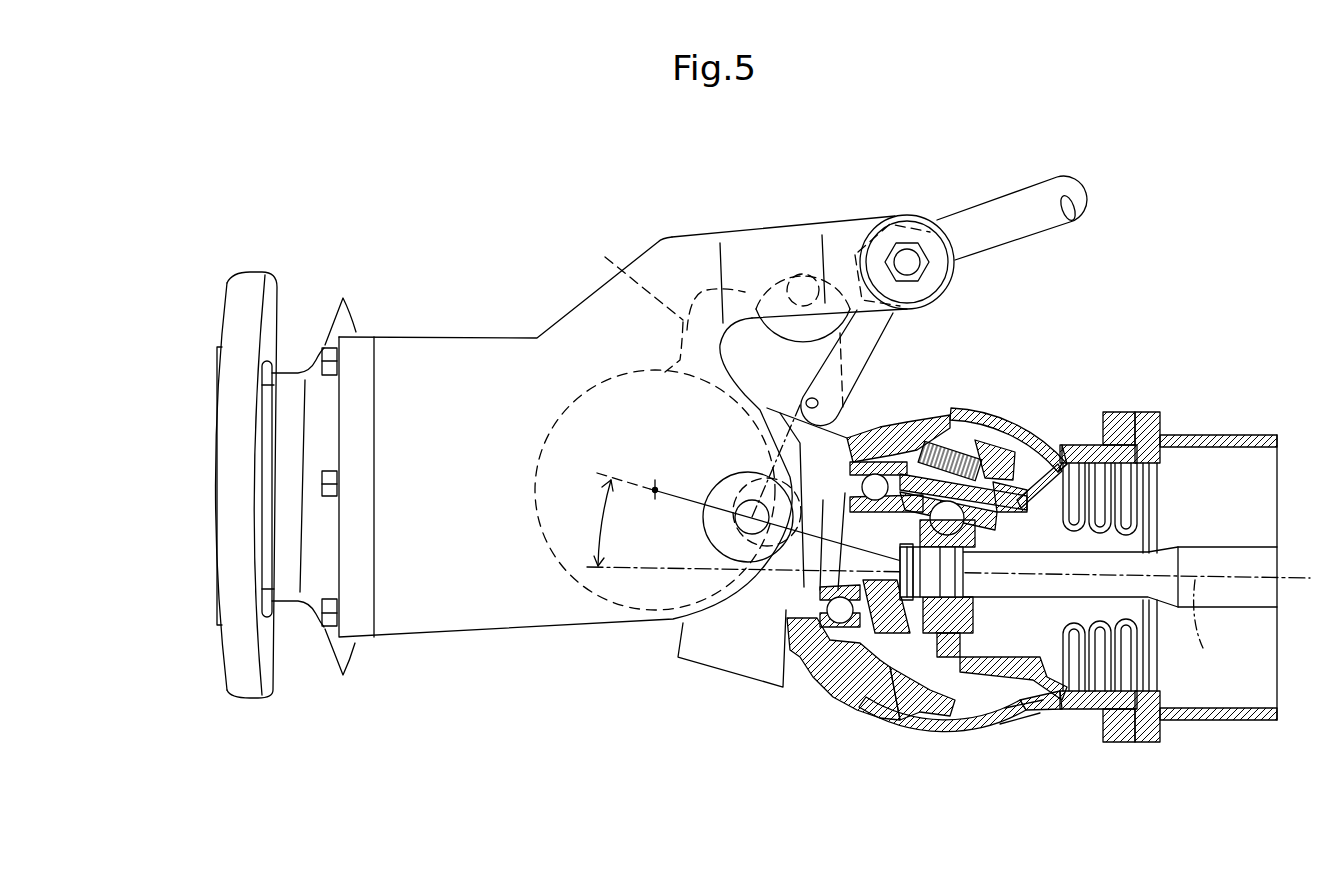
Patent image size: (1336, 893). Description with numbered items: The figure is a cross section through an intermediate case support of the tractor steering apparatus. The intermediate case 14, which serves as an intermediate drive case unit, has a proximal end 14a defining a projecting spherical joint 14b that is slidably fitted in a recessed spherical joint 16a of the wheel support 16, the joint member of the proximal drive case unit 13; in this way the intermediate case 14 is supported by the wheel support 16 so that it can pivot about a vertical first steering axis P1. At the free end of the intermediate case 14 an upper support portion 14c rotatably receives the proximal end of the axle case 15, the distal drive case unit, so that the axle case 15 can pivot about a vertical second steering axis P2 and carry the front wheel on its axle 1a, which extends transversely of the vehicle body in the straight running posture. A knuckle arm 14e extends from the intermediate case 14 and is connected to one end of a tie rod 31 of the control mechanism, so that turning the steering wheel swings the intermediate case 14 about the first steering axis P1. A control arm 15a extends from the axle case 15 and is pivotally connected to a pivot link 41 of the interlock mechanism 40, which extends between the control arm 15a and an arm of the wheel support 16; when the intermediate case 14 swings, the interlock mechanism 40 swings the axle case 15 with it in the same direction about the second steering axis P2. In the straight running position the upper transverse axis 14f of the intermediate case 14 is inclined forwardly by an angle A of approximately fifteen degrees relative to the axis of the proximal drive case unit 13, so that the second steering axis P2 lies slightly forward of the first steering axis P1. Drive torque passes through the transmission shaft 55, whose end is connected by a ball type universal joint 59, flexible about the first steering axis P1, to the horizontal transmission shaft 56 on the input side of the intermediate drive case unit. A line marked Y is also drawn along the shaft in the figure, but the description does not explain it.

The axle 1a is at (208, 487).
The proximal drive case unit 13 is at (1252, 435).
The intermediate case 14 is at (720, 673).
The proximal end 14a is at (805, 658).
The projecting spherical joint 14b is at (930, 733).
The upper support portion 14c is at (545, 522).
The knuckle arm 14e is at (743, 317).
The upper transverse axis 14f is at (690, 470).
The axle case 15 is at (449, 336).
The control arm 15a is at (841, 230).
The wheel support 16 is at (1027, 420).
The recessed spherical joint 16a is at (1040, 713).
The tie rod 31 is at (1020, 200).
The interlock mechanism 40 is at (878, 413).
The pivot link 41 is at (880, 322).
The transmission shaft 55 is at (1235, 550).
The horizontal transmission shaft 56 is at (890, 428).
The universal joint 59 is at (983, 607).
The first steering axis P1 is at (945, 572).
The second steering axis P2 is at (650, 487).
The angle A is at (595, 523).
The axis Y is at (1204, 630).